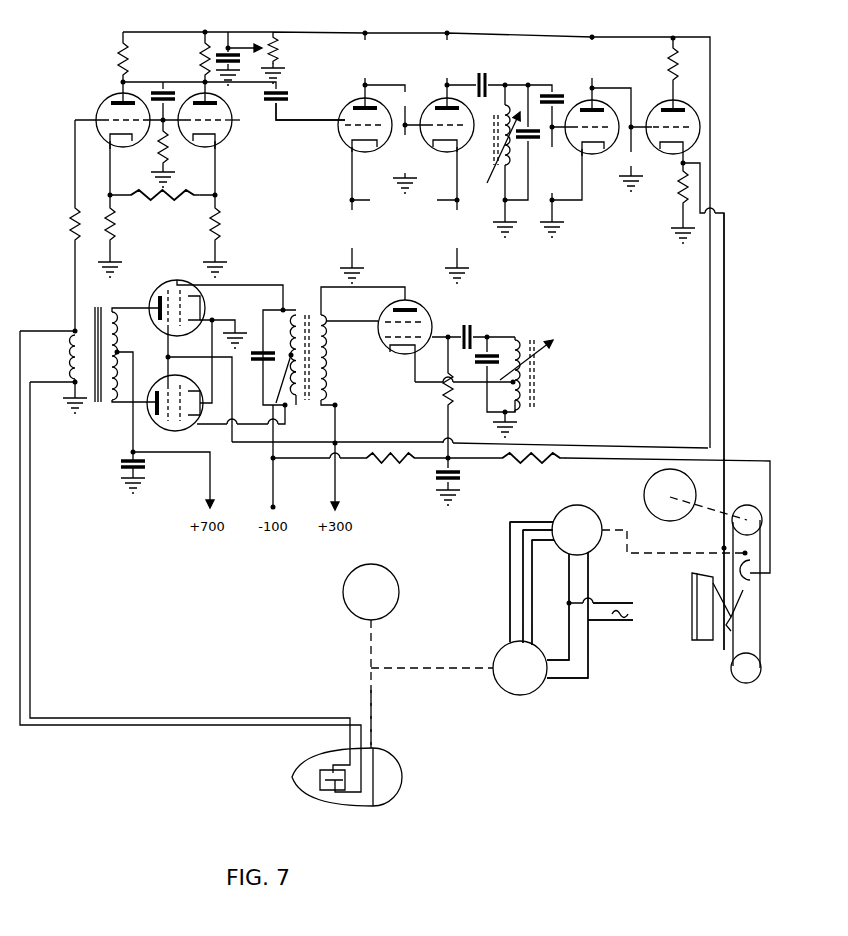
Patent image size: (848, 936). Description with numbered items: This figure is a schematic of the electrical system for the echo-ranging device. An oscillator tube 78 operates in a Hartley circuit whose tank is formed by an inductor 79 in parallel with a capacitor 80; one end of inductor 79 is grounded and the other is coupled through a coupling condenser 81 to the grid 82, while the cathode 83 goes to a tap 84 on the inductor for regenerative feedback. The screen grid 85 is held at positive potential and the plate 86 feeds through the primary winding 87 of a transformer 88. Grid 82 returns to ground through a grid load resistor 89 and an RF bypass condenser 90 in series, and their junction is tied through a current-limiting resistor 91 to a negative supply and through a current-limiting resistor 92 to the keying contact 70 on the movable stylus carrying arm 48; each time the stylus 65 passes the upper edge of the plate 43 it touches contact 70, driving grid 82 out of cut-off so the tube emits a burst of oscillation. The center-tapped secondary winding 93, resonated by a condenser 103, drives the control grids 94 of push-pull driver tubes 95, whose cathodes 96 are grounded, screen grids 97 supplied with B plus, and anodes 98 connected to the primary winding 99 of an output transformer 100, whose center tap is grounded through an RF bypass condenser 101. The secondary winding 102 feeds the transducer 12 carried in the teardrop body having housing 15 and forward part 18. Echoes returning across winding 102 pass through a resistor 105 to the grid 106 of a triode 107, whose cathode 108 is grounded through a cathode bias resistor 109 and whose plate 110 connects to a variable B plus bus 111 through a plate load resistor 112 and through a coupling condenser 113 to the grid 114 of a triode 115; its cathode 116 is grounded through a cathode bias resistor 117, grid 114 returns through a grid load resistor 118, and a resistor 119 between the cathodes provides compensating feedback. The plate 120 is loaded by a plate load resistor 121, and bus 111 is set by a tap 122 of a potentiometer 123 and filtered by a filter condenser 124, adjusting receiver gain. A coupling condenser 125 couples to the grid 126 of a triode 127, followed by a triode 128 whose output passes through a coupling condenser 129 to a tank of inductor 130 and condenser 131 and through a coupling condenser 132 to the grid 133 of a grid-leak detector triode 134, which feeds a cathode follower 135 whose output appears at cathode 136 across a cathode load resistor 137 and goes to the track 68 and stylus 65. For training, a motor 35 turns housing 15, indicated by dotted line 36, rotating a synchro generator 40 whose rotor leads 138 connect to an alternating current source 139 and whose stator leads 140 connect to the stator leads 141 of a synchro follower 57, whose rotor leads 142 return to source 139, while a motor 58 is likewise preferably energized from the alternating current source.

The transducer 12 is at (320, 783).
The housing 15 is at (350, 809).
The forward part 18 is at (397, 793).
The motor 35 is at (392, 576).
The dotted line 36 is at (374, 699).
The synchro generator 40 is at (515, 696).
The plate 43 is at (692, 584).
The movable stylus carrying arm 48 is at (747, 640).
The synchro follower 57 is at (558, 553).
The motor 58 is at (644, 498).
The stylus 65 is at (713, 599).
The track 68 is at (725, 636).
The keying contact 70 is at (750, 580).
The oscillator tube 78 is at (428, 316).
The inductor 79 is at (527, 362).
The capacitor 80 is at (491, 355).
The coupling condenser 81 is at (470, 327).
The grid 82 is at (395, 339).
The cathode 83 is at (408, 352).
The tap 84 is at (513, 386).
The screen grid 85 is at (390, 324).
The plate 86 is at (407, 305).
The primary winding 87 is at (327, 355).
The transformer 88 is at (307, 300).
The grid load resistor 89 is at (445, 406).
The RF bypass condenser 90 is at (459, 476).
The current-limiting resistor 91 is at (380, 466).
The current-limiting resistor 92 is at (540, 468).
The secondary winding 93 is at (291, 347).
The control grids 94 is at (167, 290).
The push-pull driver tubes 95 is at (180, 289).
The cathodes 96 is at (201, 305).
The screen grids 97 is at (172, 385).
The anodes 98 is at (158, 301).
The primary winding 99 is at (132, 356).
The output transformer 100 is at (99, 304).
The RF bypass condenser 101 is at (118, 471).
The secondary winding 102 is at (70, 356).
The condenser 103 is at (261, 366).
The resistor 105 is at (66, 222).
The grid 106 is at (110, 118).
The triode 107 is at (100, 98).
The cathode 108 is at (115, 146).
The cathode bias resistor 109 is at (115, 232).
The plate 110 is at (117, 98).
The variable B+ voltage bus 111 is at (226, 30).
The plate load resistor 112 is at (130, 68).
The coupling condenser 113 is at (169, 89).
The grid 114 is at (216, 122).
The triode 115 is at (235, 119).
The cathode 116 is at (217, 148).
The cathode bias resistor 117 is at (223, 234).
The grid load resistor 118 is at (170, 140).
The resistor 119 is at (165, 200).
The plate 120 is at (200, 98).
The plate load resistor 121 is at (250, 82).
The tap 122 is at (236, 46).
The potentiometer 123 is at (266, 60).
The filter condenser 124 is at (261, 98).
The coupling condenser 125 is at (288, 97).
The grid 126 is at (353, 139).
The triode 127 is at (338, 127).
The triode 128 is at (456, 148).
The coupling condenser 129 is at (483, 76).
The inductor 130 is at (505, 176).
The condenser 131 is at (529, 130).
The coupling condenser 132 is at (556, 92).
The grid 133 is at (600, 122).
The grid-leak detector triode 134 is at (604, 152).
The cathode follower 135 is at (660, 105).
The cathode 136 is at (675, 153).
The cathode load resistor 137 is at (680, 200).
The rotor leads 138 is at (552, 681).
The alternating current source 139 is at (598, 622).
The stator leads 140 is at (522, 642).
The stator leads 141 is at (555, 536).
The rotor leads 142 is at (581, 556).